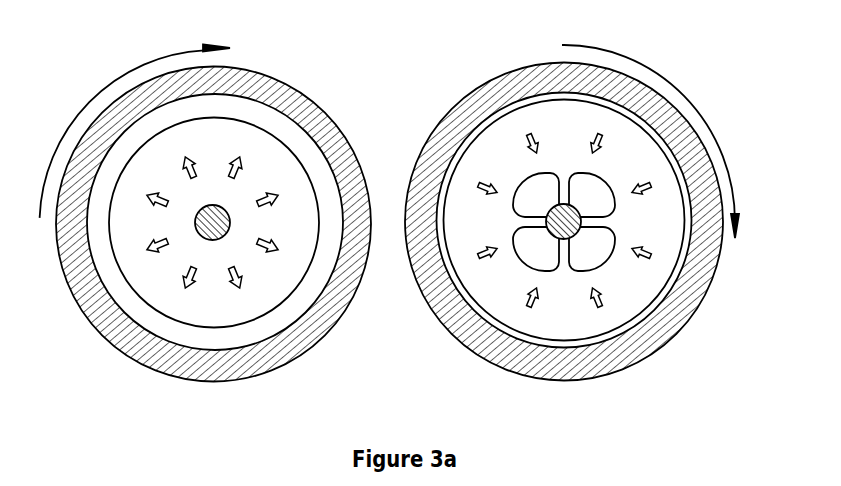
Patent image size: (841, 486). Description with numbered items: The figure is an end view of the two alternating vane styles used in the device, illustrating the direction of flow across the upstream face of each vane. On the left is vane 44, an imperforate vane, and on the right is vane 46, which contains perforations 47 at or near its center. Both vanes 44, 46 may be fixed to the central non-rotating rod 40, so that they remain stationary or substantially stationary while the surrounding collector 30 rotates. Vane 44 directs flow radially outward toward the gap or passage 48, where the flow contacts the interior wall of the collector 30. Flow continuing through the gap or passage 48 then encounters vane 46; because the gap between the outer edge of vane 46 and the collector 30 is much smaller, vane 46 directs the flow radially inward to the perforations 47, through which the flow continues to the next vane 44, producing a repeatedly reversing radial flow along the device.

The collector 30 is at (450, 128).
The central non-rotating rod 40 is at (551, 235).
The vane 44 is at (135, 275).
The vane 46 is at (632, 282).
The perforations 47 is at (534, 188).
The gap or passage 48 is at (173, 335).